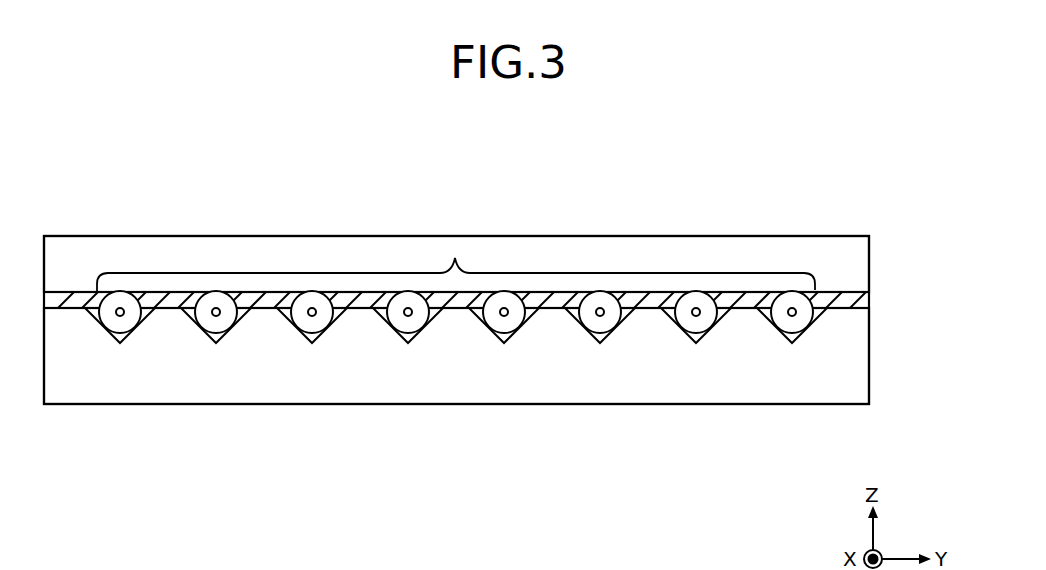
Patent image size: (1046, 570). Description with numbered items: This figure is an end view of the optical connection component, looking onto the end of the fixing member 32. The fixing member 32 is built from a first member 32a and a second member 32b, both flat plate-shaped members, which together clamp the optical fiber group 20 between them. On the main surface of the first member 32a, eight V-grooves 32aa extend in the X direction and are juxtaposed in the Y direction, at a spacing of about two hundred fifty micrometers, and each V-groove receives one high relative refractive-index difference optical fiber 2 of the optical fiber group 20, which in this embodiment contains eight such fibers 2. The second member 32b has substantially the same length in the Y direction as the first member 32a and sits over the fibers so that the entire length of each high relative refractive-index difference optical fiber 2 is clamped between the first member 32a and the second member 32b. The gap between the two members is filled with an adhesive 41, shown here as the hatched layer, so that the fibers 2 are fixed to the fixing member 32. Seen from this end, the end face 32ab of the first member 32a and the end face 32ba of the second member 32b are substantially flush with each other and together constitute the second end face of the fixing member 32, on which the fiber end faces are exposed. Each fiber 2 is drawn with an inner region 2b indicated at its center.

The fixing member 32 is at (868, 186).
The second member 32b is at (814, 228).
The end face 32ba is at (73, 257).
The first member 32a is at (814, 412).
The V-grooves 32aa is at (83, 301).
The end face 32ab is at (570, 384).
The adhesive 41 is at (870, 298).
The optical fiber group 20 is at (456, 320).
The high relative refractive-index difference optical fiber 2 is at (149, 377).
The spacer ball core 2b is at (120, 313).